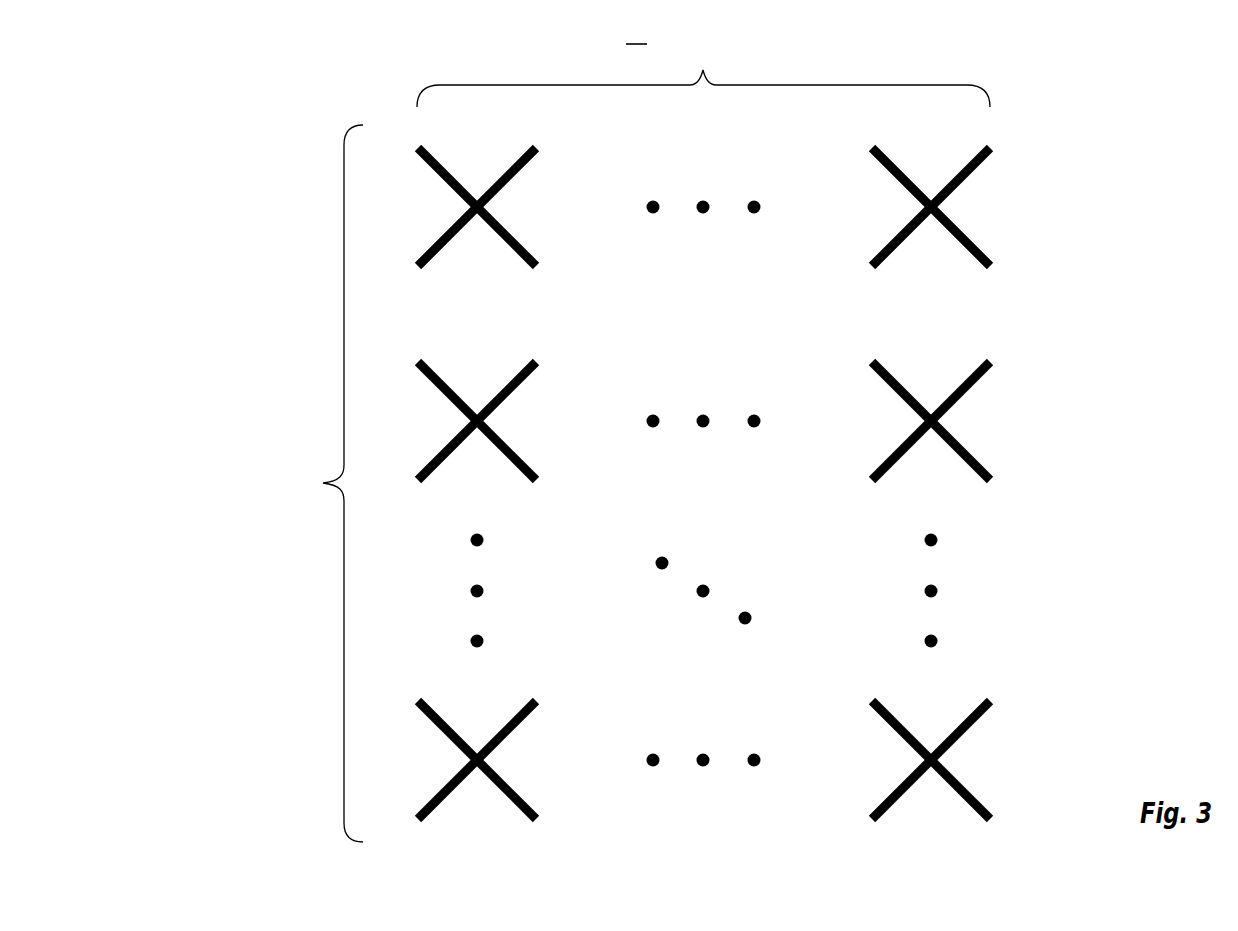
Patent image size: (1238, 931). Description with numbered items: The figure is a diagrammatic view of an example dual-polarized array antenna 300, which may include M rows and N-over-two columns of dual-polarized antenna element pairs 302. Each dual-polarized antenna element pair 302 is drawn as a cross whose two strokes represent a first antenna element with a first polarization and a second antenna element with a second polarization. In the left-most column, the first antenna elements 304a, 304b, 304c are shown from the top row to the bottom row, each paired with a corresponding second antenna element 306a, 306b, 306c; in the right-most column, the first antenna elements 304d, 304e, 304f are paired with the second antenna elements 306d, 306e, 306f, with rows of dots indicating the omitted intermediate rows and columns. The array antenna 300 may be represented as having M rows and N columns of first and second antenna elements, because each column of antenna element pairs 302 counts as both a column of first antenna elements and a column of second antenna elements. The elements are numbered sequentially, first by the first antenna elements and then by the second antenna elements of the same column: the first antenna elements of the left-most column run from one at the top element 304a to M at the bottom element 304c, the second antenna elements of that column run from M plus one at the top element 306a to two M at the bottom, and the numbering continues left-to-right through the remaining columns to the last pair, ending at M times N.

The dual-polarized array antenna 300 is at (292, 67).
The dual-polarized antenna element pair 302 is at (480, 152).
The first antenna element 304a is at (448, 180).
The first antenna element 304b is at (448, 394).
The first antenna element 304c is at (448, 732).
The first antenna element 304d is at (900, 180).
The first antenna element 304e is at (900, 394).
The first antenna element 304f is at (900, 732).
The second antenna element 306a is at (508, 179).
The second antenna element 306b is at (508, 393).
The second antenna element 306c is at (508, 731).
The second antenna element 306d is at (962, 179).
The second antenna element 306e is at (962, 393).
The second antenna element 306f is at (962, 731).